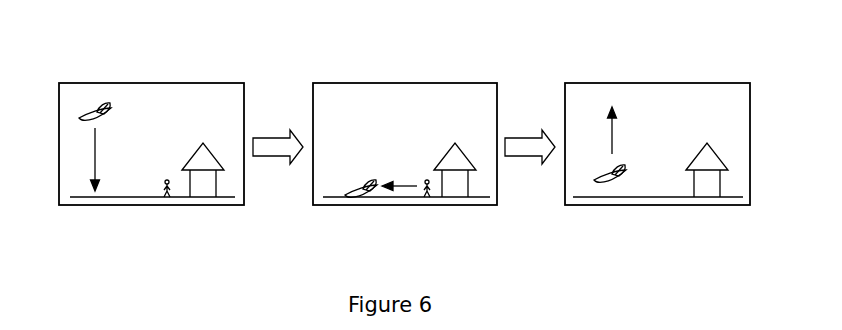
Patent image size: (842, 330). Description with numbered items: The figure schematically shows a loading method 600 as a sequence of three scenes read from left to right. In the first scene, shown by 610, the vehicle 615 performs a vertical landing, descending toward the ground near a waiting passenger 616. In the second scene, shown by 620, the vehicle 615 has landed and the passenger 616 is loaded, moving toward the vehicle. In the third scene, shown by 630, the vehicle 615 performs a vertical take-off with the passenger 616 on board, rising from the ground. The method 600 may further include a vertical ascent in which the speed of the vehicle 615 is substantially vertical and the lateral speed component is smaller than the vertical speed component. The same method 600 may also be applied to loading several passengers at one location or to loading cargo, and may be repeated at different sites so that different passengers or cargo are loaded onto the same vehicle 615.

The loading method 600 is at (398, 149).
The vertical landing step 610 is at (145, 116).
The vehicle 615 is at (95, 110).
The passenger 616 is at (165, 180).
The passenger loading step 620 is at (481, 116).
The vertical take-off step 630 is at (734, 116).